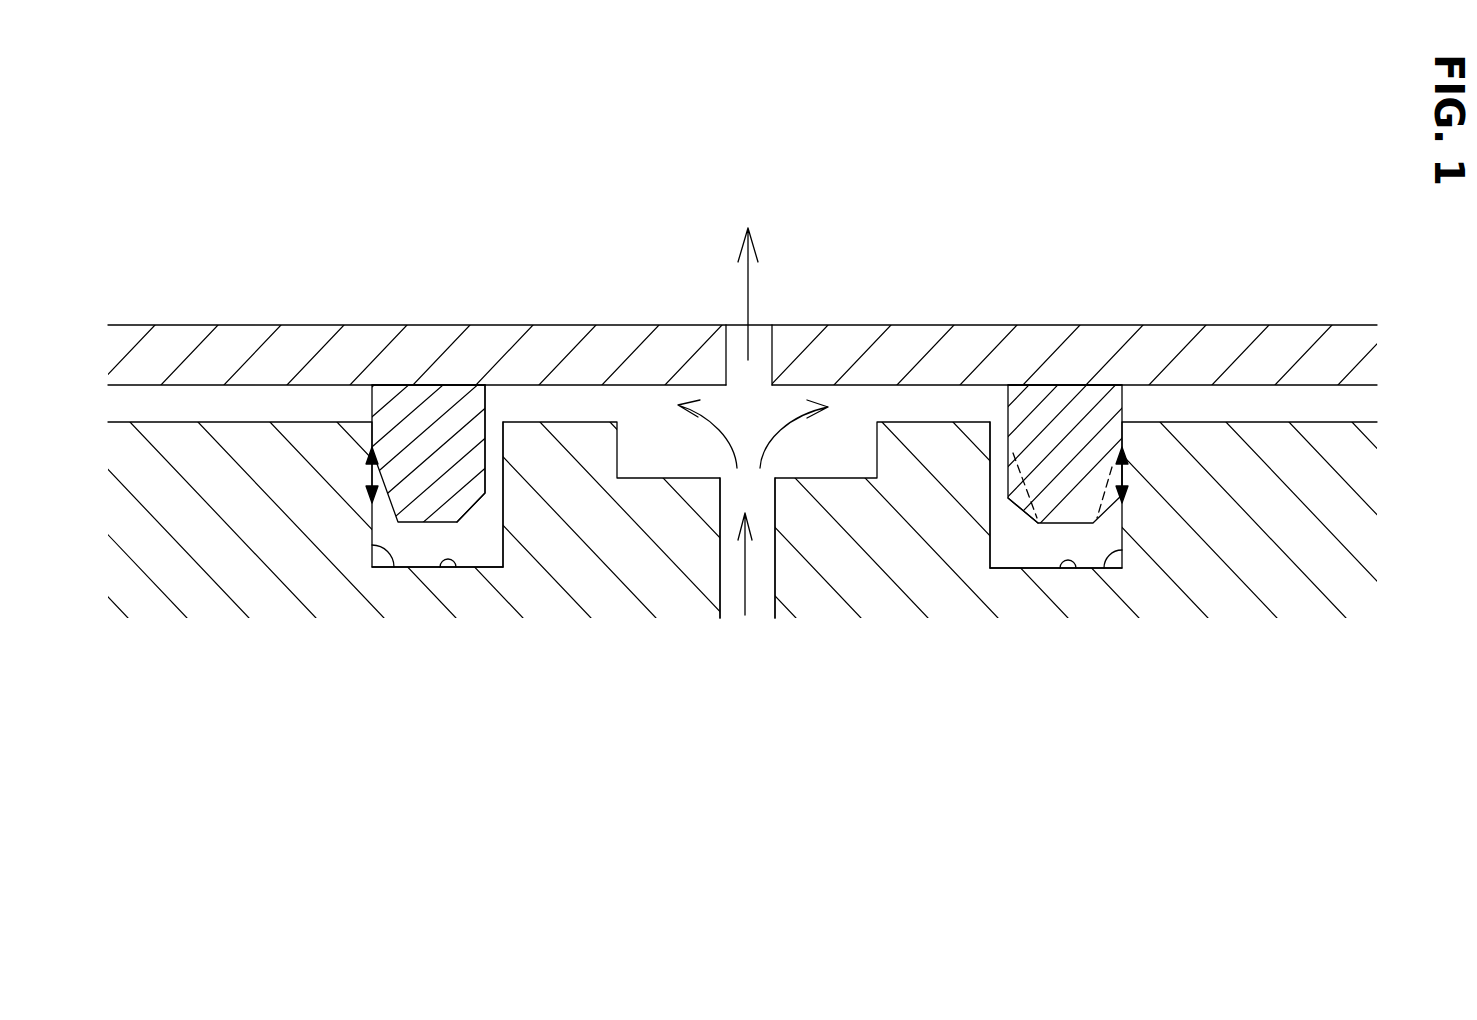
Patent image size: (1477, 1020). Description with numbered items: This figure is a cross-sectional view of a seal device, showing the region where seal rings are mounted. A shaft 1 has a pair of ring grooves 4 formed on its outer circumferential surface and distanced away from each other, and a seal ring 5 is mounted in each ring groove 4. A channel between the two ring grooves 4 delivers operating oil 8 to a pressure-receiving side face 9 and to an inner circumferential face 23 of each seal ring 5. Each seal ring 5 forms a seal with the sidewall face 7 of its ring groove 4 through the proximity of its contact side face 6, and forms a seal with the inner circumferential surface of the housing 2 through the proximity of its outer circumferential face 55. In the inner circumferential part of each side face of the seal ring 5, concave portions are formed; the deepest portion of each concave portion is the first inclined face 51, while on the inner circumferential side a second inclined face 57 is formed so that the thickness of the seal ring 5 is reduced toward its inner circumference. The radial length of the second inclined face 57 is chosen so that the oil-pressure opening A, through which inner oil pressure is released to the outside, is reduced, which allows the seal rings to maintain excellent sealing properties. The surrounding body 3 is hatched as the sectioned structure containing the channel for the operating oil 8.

The shaft 1 is at (633, 568).
The housing 2 is at (838, 350).
The base member 3 is at (752, 499).
The ring groove 4 is at (450, 558).
The seal ring 5 is at (453, 435).
The contact side face 6 is at (371, 388).
The sidewall face 7 is at (394, 567).
The operating oil 8 is at (747, 566).
The pressure-receiving side face 9 is at (487, 412).
The inner circumferential face 23 is at (422, 525).
The first inclined face 51 is at (473, 480).
The outer circumferential face 55 is at (450, 384).
The second inclined face 57 is at (1036, 520).
The oil-pressure opening A is at (358, 481).